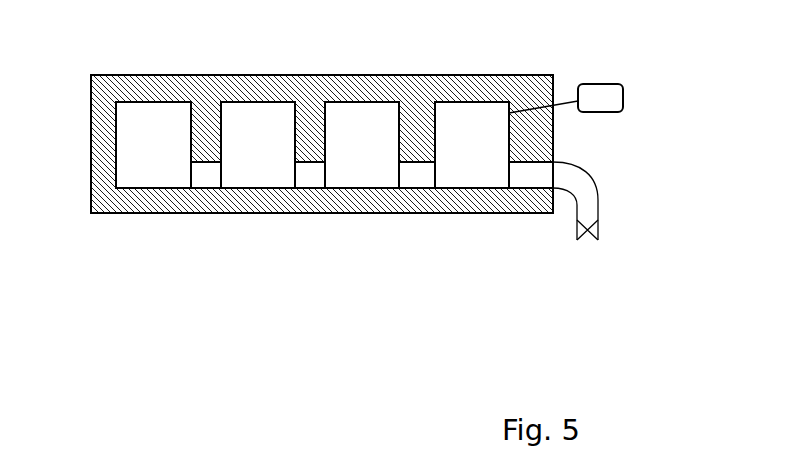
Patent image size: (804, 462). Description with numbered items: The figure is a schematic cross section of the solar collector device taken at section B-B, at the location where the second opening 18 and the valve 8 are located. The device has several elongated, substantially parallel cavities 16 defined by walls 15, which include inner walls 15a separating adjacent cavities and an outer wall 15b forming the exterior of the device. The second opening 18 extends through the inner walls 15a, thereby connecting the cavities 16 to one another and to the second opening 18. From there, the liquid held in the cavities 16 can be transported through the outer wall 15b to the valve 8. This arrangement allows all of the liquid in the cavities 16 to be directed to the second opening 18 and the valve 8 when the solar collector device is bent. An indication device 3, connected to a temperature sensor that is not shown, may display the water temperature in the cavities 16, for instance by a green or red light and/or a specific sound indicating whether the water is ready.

The walls 15 is at (255, 82).
The partition walls between cavities 15a is at (307, 150).
The outer wall 15b is at (524, 93).
The cavities 16 is at (147, 157).
The indication device 3 is at (623, 94).
The valve 8 is at (600, 227).
The second opening 18 is at (534, 188).